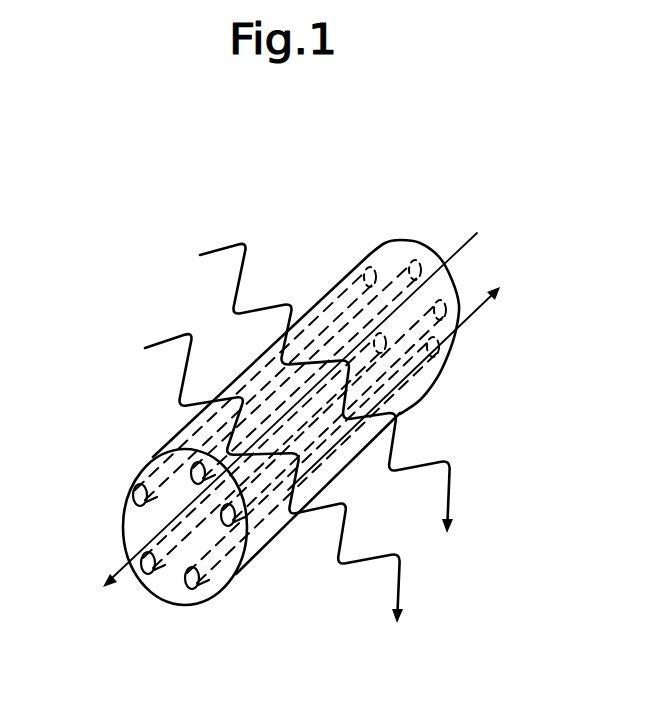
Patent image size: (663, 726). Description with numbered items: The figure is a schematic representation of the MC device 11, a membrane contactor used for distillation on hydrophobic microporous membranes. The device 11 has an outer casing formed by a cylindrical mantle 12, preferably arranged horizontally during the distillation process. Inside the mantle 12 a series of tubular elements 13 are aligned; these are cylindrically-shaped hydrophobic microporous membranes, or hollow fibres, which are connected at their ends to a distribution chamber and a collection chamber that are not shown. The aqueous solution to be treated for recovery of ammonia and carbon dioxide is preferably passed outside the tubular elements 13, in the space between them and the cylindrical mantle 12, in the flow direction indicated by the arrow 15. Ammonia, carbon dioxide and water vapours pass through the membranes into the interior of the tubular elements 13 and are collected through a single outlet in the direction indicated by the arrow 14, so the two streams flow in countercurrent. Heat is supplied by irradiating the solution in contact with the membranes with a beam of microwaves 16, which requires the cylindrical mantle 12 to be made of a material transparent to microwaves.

The MC device 11 is at (364, 200).
The cylindrical mantle 12 is at (258, 566).
The tubular elements 13 is at (185, 472).
The arrow 14 is at (473, 313).
The arrow 15 is at (122, 577).
The beam of microwaves 16 is at (224, 247).